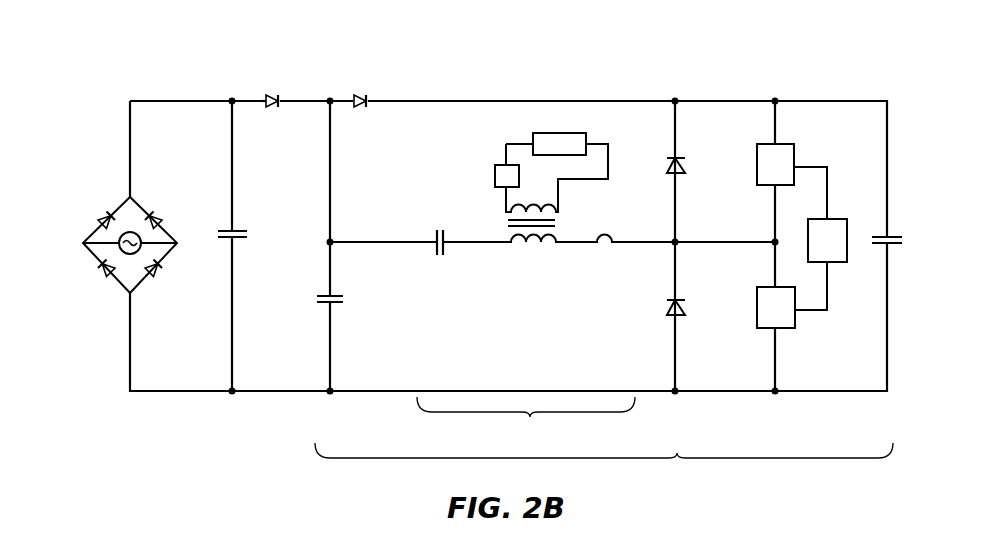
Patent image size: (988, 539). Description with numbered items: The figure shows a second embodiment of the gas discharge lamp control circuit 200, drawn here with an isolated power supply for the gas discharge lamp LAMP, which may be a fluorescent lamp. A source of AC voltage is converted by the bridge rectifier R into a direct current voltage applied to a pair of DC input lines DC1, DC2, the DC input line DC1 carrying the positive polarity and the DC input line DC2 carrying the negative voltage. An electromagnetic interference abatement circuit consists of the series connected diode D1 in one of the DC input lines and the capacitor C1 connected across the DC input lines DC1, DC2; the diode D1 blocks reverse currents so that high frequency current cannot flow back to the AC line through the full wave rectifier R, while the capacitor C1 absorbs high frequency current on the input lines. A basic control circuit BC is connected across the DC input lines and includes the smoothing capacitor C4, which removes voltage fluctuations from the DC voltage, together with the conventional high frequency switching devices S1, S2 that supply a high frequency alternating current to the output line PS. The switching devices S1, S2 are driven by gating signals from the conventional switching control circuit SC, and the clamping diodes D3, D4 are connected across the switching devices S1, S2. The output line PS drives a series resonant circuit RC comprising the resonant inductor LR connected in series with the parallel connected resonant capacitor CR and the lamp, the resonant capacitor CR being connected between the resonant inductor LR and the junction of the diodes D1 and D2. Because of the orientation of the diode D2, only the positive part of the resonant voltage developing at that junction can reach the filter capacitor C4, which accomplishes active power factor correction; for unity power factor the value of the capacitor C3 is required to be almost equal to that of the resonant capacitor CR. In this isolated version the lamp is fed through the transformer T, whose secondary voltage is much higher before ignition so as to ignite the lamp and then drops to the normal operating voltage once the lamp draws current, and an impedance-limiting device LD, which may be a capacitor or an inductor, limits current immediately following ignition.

The gas discharge lamp control circuit 200 is at (743, 78).
The DC input line DC1 is at (186, 100).
The DC input line DC2 is at (255, 393).
The bridge rectifier R is at (109, 286).
The capacitor C1 is at (222, 240).
The diode D1 is at (272, 96).
The diode D2 is at (362, 96).
The capacitor C3 is at (340, 306).
The resonant capacitor CR is at (432, 250).
The gas discharge lamp LAMP is at (530, 134).
The impedance-limiting device LD is at (494, 176).
The transformer T is at (547, 245).
The resonant inductor LR is at (612, 238).
The clamping diode D3 is at (676, 165).
The clamping diode D4 is at (684, 308).
The output line PS is at (736, 244).
The high frequency switching device S1 is at (787, 142).
The switching control circuit SC is at (847, 227).
The high frequency switching device S2 is at (791, 322).
The smoothing capacitor C4 is at (889, 235).
The series resonant circuit RC is at (526, 422).
The basic control circuit BC is at (604, 467).